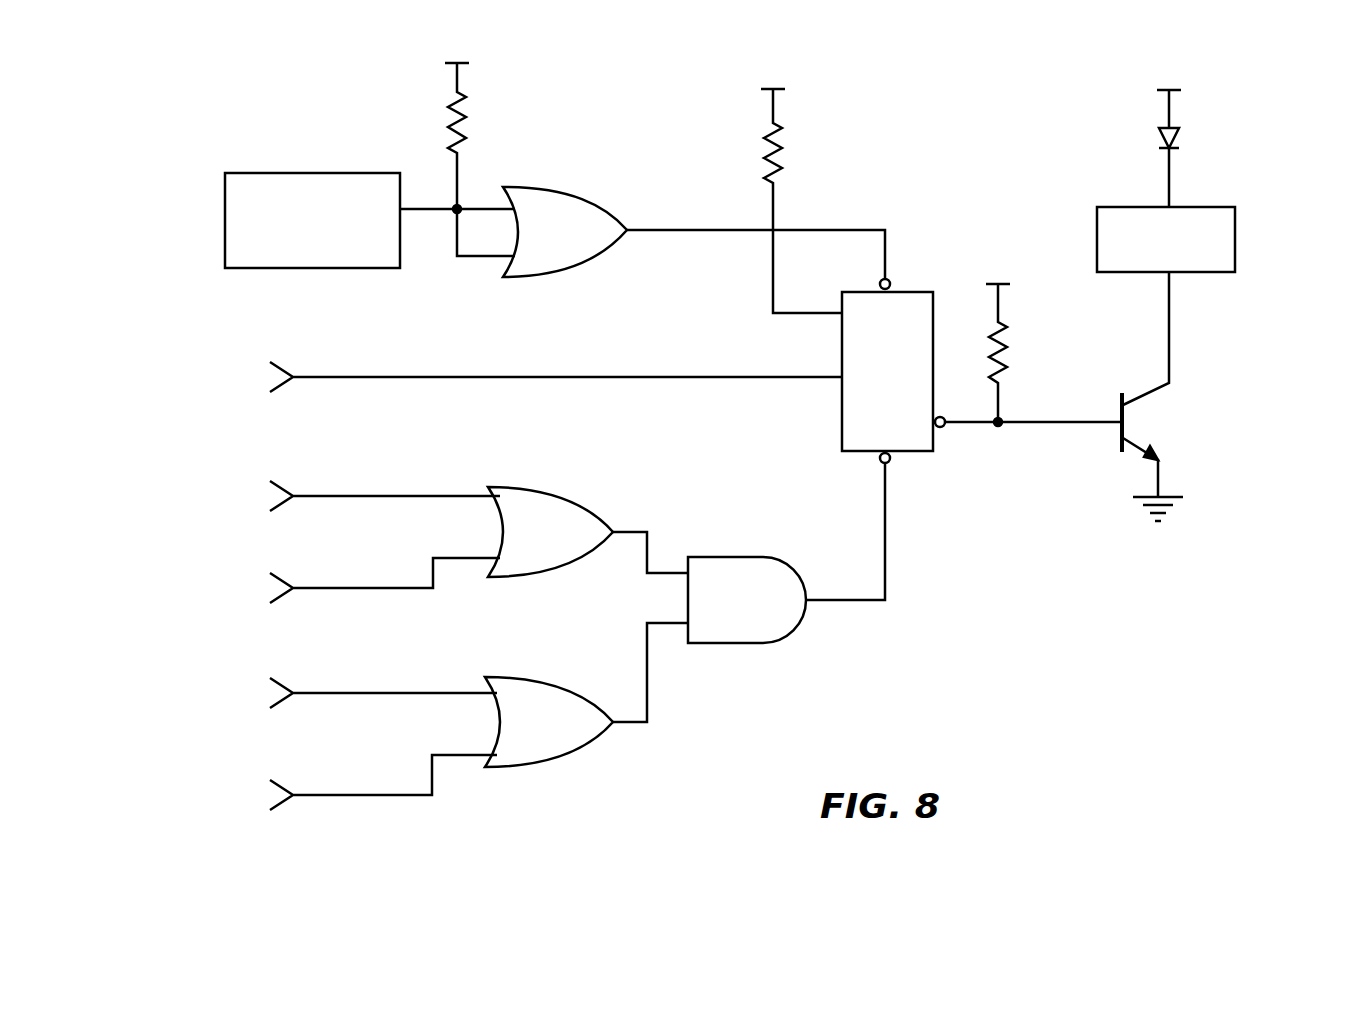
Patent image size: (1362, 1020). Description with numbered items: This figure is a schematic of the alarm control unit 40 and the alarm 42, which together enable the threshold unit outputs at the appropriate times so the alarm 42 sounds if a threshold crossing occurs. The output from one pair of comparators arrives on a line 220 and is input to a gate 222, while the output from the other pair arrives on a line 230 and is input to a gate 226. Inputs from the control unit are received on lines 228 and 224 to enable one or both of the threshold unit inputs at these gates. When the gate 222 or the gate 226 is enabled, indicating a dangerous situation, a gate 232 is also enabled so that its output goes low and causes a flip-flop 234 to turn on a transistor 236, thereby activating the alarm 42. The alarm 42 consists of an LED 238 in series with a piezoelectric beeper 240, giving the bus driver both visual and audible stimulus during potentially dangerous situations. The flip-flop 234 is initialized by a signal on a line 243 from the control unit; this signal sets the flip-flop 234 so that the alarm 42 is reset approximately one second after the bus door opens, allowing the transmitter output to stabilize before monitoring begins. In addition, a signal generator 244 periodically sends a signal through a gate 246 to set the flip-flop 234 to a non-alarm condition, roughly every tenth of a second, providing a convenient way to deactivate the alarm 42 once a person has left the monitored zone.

The alarm control unit 40 is at (681, 786).
The alarm 42 is at (1282, 85).
The line 220 is at (368, 496).
The gate 222 is at (565, 487).
The line 224 is at (355, 693).
The gate 226 is at (542, 676).
The line 228 is at (362, 588).
The line 230 is at (354, 795).
The gate 232 is at (725, 557).
The flip-flop 234 is at (842, 408).
The transistor 236 is at (1128, 407).
The LED 238 is at (1180, 140).
The piezoelectric beeper 240 is at (1115, 207).
The line 243 is at (443, 377).
The signal generator 244 is at (315, 173).
The gate 246 is at (572, 188).